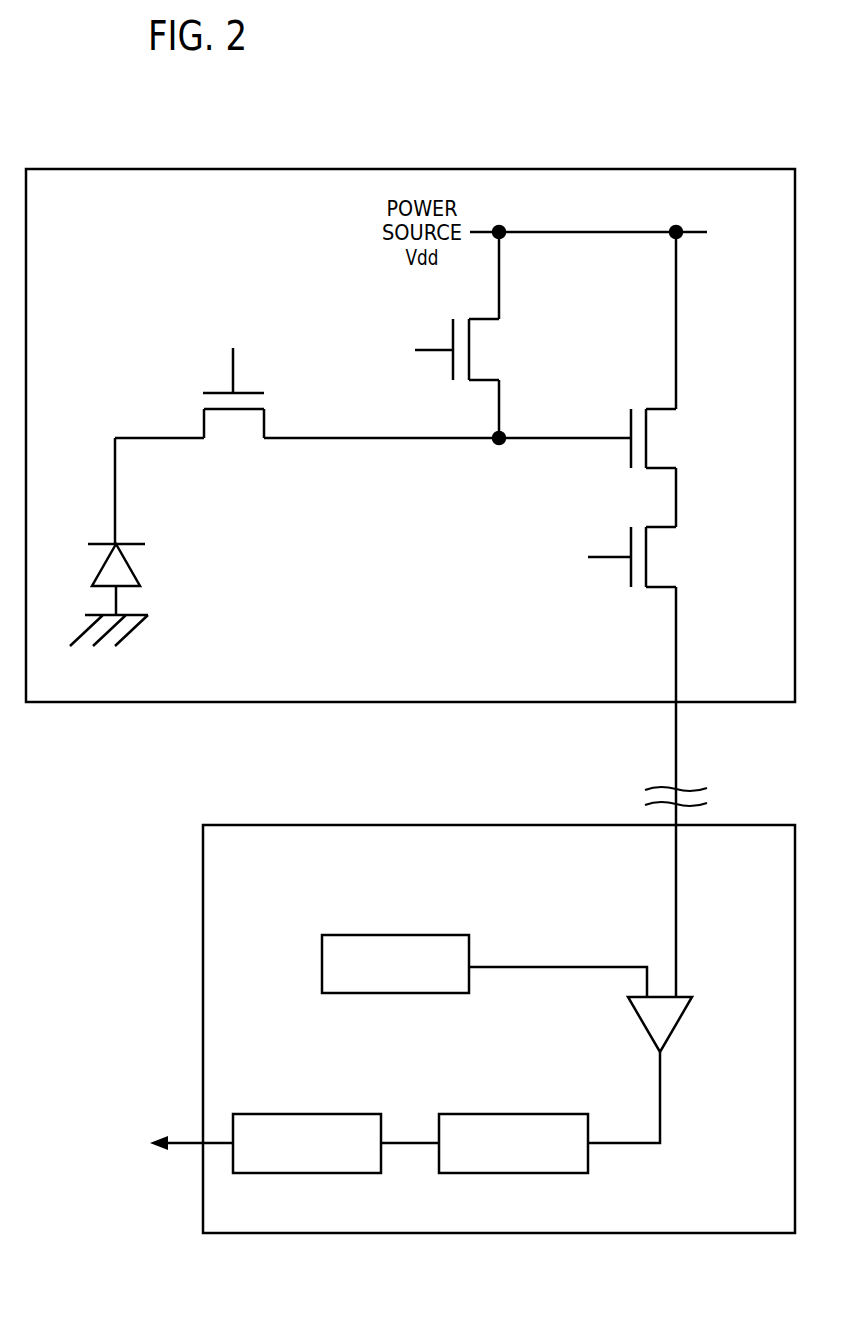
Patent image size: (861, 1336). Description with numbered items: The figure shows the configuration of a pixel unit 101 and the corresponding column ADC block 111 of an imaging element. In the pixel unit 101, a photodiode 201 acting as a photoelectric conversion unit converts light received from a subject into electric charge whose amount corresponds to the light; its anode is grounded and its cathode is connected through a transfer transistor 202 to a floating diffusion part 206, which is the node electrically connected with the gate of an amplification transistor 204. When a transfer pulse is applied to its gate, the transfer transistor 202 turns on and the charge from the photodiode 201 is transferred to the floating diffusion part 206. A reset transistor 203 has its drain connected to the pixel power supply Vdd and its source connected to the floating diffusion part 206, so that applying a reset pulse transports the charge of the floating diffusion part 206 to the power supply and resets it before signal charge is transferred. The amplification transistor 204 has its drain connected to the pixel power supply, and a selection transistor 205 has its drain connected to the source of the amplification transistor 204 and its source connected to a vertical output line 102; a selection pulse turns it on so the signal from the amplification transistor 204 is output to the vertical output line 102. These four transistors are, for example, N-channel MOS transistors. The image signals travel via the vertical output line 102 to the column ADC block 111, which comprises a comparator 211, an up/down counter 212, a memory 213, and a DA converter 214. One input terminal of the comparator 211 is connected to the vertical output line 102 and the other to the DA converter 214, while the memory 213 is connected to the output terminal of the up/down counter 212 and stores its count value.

The pixel unit 101 is at (173, 169).
The vertical output line 102 is at (677, 762).
The column ADC block 111 is at (407, 825).
The photodiode 201 is at (135, 568).
The transfer transistor 202 is at (231, 430).
The reset transistor 203 is at (486, 353).
The amplification transistor 204 is at (666, 437).
The selection transistor 205 is at (666, 557).
The floating diffusion part 206 is at (497, 441).
The comparator 211 is at (672, 1037).
The up/down counter 212 is at (536, 1114).
The memory 213 is at (328, 1114).
The DA converter 214 is at (415, 935).